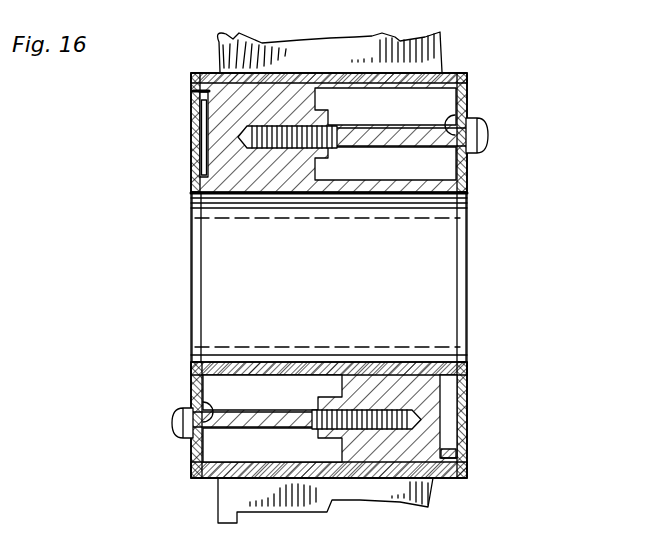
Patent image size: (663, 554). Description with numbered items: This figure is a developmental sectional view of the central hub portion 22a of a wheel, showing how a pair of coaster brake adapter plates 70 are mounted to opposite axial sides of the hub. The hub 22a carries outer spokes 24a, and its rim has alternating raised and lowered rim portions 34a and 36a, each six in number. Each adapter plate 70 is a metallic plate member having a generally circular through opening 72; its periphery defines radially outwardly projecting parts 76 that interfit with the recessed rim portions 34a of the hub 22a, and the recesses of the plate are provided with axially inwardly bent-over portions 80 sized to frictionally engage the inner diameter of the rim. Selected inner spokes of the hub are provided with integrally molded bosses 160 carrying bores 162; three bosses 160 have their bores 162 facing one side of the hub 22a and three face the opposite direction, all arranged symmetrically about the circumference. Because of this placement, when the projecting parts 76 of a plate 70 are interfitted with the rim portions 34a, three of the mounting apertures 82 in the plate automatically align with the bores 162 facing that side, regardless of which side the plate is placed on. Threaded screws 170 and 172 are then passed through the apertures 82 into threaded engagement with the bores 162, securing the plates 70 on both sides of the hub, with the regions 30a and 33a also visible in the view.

The central hub portion 22a is at (180, 196).
The outer spokes 24a is at (213, 60).
The slide strip 30a is at (342, 195).
The open space 33a is at (340, 288).
The raised rim portions 34a is at (190, 78).
The lowered rim portions 36a is at (445, 72).
The coaster brake adapter plate 70 is at (194, 376).
The through opening 72 is at (463, 203).
The radially outwardly projecting parts 76 is at (463, 88).
The axially inwardly projecting portion 80 is at (198, 126).
The mounting apertures 82 is at (452, 118).
The bosses 160 is at (327, 108).
The bores 162 is at (339, 147).
The threaded screw 170 is at (488, 139).
The threaded screw 172 is at (174, 425).